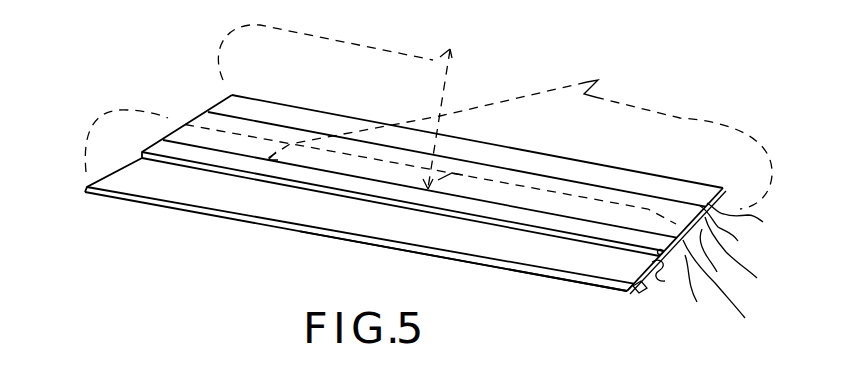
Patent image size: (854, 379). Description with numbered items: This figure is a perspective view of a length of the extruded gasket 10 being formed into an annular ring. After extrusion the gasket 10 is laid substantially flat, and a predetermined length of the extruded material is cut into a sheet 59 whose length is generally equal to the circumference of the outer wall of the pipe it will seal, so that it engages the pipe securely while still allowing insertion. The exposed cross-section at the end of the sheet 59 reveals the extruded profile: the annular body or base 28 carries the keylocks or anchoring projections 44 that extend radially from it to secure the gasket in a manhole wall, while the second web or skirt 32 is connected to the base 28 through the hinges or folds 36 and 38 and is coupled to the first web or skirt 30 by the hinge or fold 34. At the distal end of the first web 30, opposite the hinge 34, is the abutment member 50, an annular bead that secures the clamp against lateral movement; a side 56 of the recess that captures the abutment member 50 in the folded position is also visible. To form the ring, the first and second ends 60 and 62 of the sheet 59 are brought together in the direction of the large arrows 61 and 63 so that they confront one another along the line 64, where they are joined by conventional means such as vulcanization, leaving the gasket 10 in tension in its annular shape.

The gasket 10 is at (191, 238).
The annular body or base 28 is at (627, 291).
The first web or skirt 30 is at (735, 232).
The second web or skirt 32 is at (723, 257).
The hinge or fold 34 is at (747, 254).
The hinge or fold 36 is at (729, 289).
The hinge or fold 38 is at (704, 291).
The keylock or anchoring projection 44 is at (643, 299).
The abutment member 50 is at (722, 197).
The side of recess 56 is at (538, 276).
The sheet 59 is at (313, 222).
The first end 60 is at (752, 218).
The large arrow 61 is at (668, 133).
The second end 62 is at (86, 187).
The large arrow 63 is at (378, 90).
The line 64 is at (432, 122).